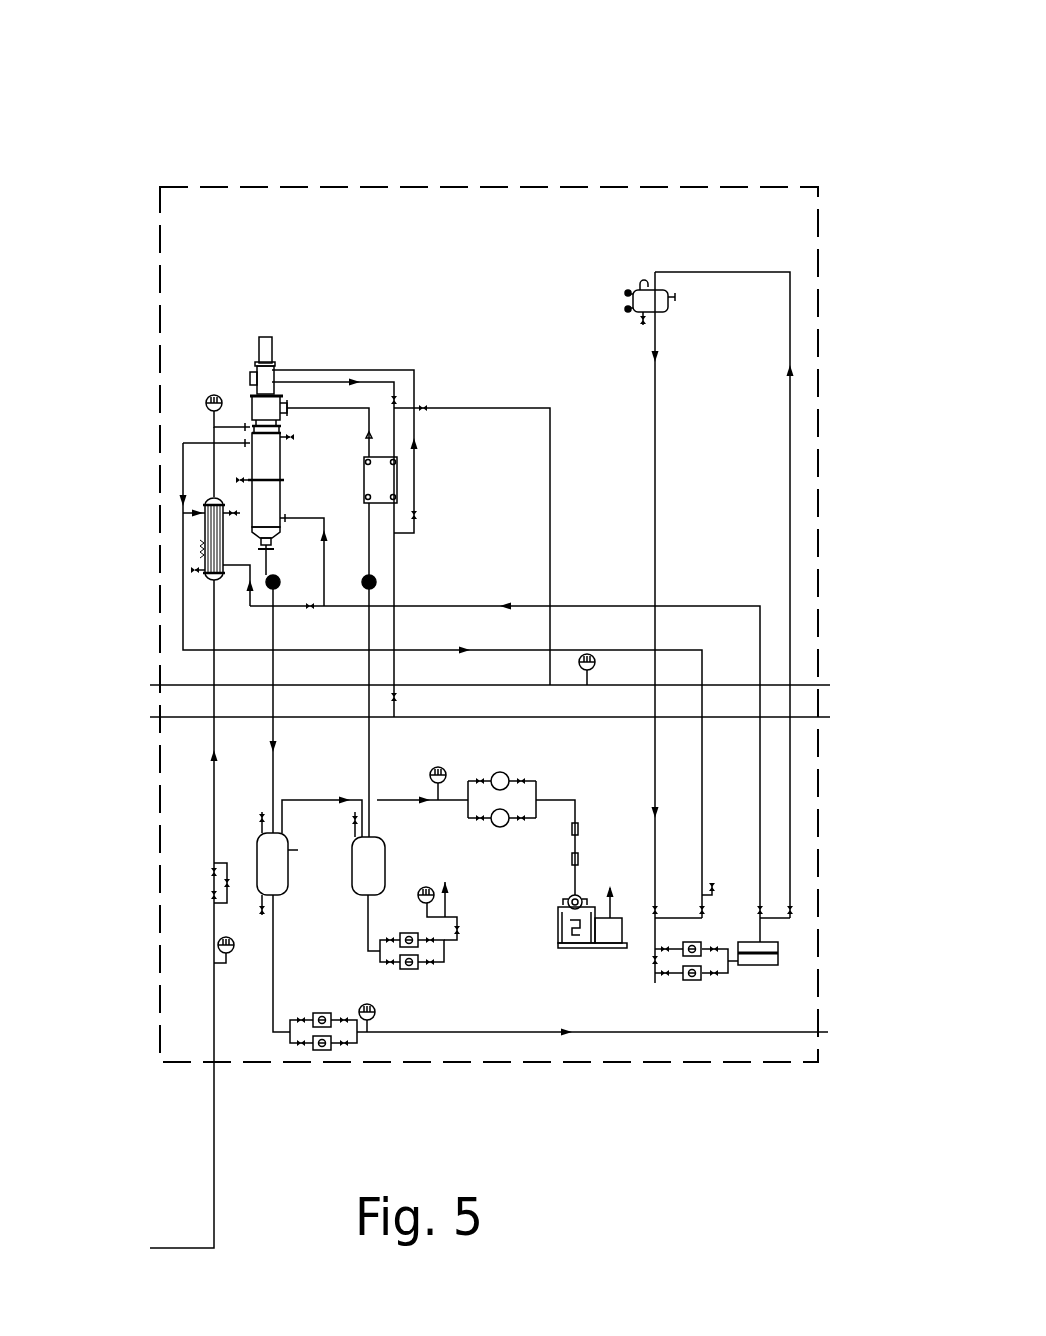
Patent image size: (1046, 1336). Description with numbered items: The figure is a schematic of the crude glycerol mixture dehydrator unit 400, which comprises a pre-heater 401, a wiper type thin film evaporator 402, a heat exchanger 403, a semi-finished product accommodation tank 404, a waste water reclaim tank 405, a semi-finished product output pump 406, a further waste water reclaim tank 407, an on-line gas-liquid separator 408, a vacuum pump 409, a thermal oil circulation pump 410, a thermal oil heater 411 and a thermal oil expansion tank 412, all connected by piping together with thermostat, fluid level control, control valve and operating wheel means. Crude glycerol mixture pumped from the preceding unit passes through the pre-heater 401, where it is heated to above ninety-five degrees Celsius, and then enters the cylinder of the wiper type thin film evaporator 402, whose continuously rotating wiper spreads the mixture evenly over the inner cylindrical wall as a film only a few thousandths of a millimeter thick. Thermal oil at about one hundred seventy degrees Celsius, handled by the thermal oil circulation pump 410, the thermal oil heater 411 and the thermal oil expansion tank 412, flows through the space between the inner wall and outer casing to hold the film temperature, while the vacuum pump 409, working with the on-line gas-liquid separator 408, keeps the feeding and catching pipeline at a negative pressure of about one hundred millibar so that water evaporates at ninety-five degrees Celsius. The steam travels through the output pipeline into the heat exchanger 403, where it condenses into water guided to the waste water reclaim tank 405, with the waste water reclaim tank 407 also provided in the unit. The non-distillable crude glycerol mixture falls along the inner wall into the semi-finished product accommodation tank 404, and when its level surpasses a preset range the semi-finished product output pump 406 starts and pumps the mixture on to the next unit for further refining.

The crude glycerol mixture dehydrator unit 400 is at (403, 184).
The pre-heater 401 is at (212, 496).
The wiper type thin film evaporator 402 is at (272, 472).
The heat exchanger 403 is at (397, 483).
The semi-finished product accommodation tank 404 is at (277, 882).
The waste water reclaim tank 405 is at (372, 863).
The semi-finished product output pump 406 is at (322, 1013).
The waste water reclaim tank 407 is at (410, 969).
The on-line gas-liquid separator 408 is at (503, 778).
The vacuum pump 409 is at (578, 948).
The thermal oil circulation pump 410 is at (693, 983).
The thermal oil heater 411 is at (753, 965).
The thermal oil expansion tank 412 is at (630, 297).